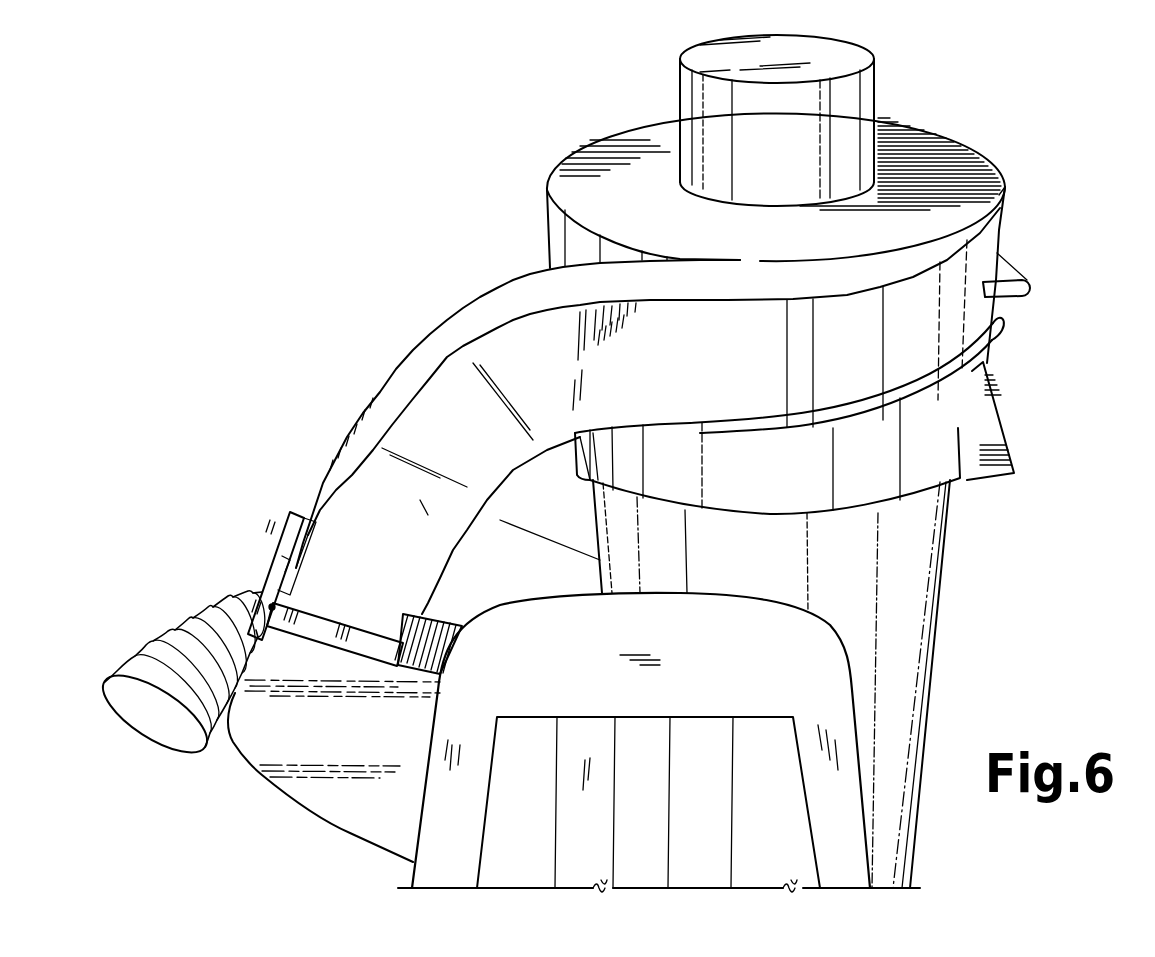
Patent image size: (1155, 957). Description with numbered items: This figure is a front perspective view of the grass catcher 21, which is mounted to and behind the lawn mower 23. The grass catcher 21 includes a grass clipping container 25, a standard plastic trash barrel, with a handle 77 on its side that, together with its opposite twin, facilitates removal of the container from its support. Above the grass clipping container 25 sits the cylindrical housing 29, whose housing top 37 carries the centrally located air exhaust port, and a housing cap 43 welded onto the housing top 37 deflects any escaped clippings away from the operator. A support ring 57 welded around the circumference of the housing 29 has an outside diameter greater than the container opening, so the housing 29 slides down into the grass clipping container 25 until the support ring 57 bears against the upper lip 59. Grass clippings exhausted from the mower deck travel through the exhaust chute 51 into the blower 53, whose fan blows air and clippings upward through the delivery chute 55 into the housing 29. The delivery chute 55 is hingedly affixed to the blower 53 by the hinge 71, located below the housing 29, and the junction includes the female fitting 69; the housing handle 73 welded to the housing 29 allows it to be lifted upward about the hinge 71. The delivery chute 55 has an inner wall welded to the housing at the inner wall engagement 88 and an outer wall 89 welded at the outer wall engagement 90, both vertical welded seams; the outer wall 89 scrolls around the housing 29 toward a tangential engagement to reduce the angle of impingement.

The grass catcher 21 is at (982, 144).
The lawn mower 23 is at (883, 792).
The grass clipping container 25 is at (767, 481).
The housing 29 is at (537, 237).
The housing top 37 is at (617, 201).
The housing cap 43 is at (875, 72).
The exhaust chute 51 is at (100, 690).
The blower 53 is at (314, 731).
The delivery chute 55 is at (379, 537).
The support ring 57 is at (990, 348).
The upper lip 59 is at (1003, 324).
The female fitting 69 is at (336, 618).
The hinge 71 is at (270, 538).
The housing handle 73 is at (1024, 282).
The handle 77 is at (1000, 478).
The inner wall engagement 88 is at (740, 260).
The outer wall 89 is at (613, 338).
The outer wall engagement 90 is at (1012, 192).